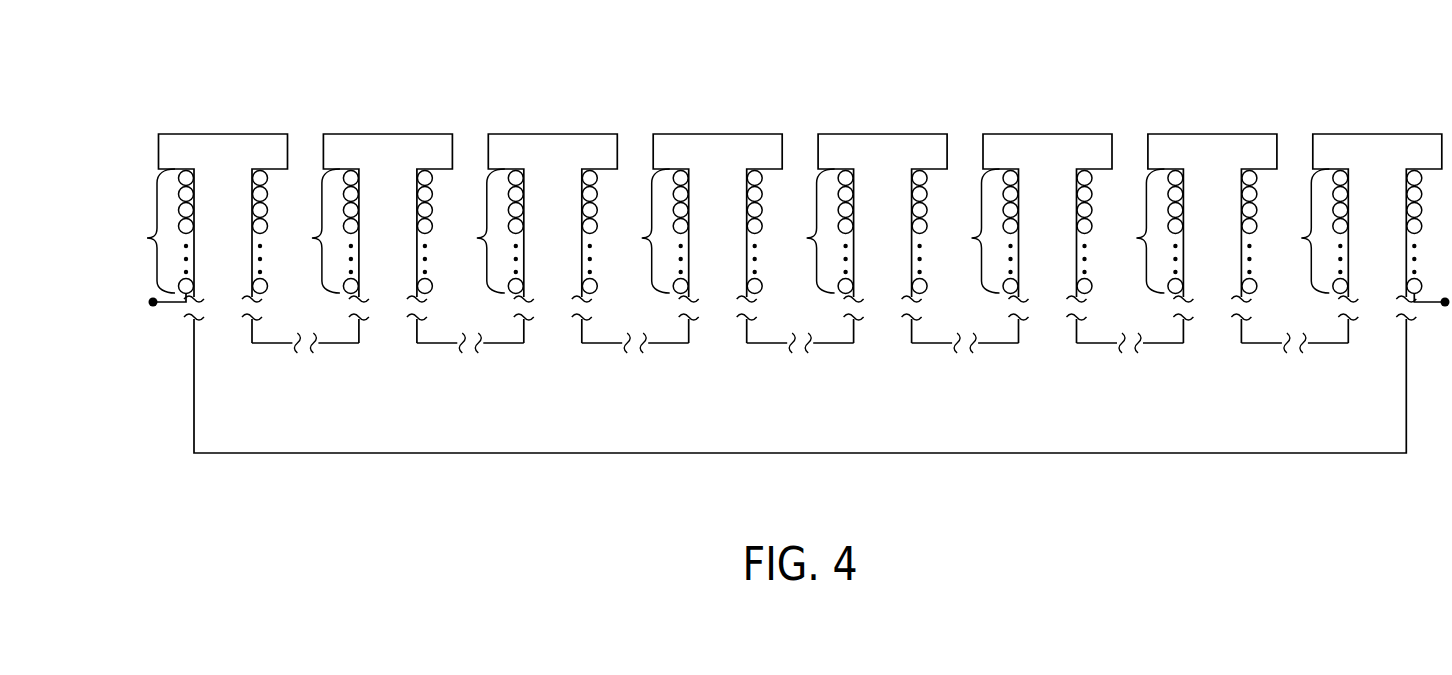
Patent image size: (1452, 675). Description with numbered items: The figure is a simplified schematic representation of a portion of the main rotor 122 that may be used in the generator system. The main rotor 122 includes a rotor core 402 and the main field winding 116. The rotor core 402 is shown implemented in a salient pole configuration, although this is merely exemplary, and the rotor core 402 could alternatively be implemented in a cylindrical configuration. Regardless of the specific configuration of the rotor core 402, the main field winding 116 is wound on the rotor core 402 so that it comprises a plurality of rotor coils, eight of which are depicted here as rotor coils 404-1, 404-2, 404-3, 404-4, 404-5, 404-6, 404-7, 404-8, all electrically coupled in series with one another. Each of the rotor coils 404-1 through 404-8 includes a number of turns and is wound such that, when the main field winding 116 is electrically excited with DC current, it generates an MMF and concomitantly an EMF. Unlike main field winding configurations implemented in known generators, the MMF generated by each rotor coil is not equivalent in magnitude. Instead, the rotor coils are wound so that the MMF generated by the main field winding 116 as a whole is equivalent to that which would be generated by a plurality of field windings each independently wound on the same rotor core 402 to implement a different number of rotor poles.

The main rotor 122 is at (893, 97).
The rotor coil 404-1 is at (197, 216).
The rotor coil 404-2 is at (361, 216).
The rotor coil 404-3 is at (526, 216).
The rotor coil 404-4 is at (691, 216).
The rotor coil 404-5 is at (856, 216).
The rotor coil 404-6 is at (1021, 216).
The rotor coil 404-7 is at (1186, 216).
The rotor coil 404-8 is at (1351, 216).
The rotor core 402 is at (775, 418).
The main field winding 116 is at (168, 306).